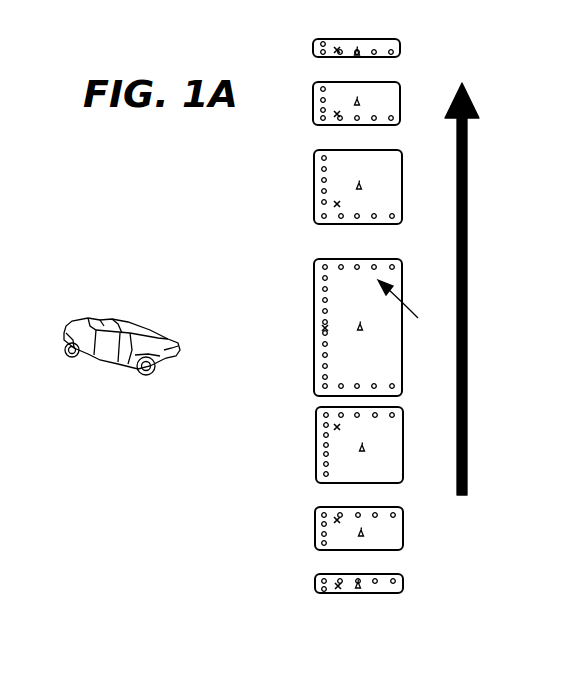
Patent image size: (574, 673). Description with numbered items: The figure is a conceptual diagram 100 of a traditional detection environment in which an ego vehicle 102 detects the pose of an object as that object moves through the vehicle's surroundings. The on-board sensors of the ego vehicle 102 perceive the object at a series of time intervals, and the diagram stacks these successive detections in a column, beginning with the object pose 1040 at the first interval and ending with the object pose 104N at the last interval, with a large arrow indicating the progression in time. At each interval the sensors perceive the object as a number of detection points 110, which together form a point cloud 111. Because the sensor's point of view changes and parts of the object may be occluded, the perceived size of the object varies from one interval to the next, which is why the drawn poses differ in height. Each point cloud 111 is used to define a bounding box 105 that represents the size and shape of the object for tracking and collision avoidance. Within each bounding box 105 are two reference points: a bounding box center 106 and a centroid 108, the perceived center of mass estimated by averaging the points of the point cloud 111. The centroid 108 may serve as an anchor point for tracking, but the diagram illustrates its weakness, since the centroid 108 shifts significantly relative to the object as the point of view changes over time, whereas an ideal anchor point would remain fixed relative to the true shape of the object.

The conceptual diagram 100 is at (233, 200).
The ego vehicle 102 is at (73, 330).
The object pose at last time interval 104N is at (306, 39).
The object pose at initial time interval 1040 is at (305, 572).
The bounding box 105 is at (386, 38).
The bounding box center 106 is at (356, 47).
The centroid 108 is at (335, 54).
The detection points 110 is at (325, 202).
The point cloud 111 is at (409, 309).